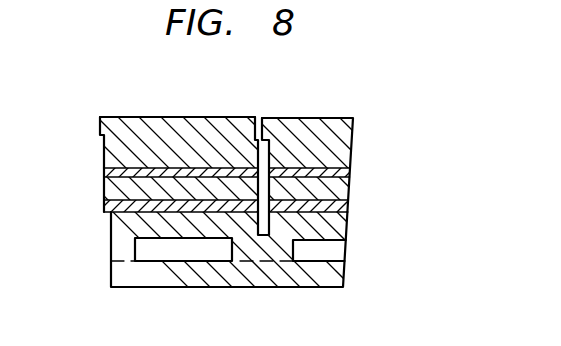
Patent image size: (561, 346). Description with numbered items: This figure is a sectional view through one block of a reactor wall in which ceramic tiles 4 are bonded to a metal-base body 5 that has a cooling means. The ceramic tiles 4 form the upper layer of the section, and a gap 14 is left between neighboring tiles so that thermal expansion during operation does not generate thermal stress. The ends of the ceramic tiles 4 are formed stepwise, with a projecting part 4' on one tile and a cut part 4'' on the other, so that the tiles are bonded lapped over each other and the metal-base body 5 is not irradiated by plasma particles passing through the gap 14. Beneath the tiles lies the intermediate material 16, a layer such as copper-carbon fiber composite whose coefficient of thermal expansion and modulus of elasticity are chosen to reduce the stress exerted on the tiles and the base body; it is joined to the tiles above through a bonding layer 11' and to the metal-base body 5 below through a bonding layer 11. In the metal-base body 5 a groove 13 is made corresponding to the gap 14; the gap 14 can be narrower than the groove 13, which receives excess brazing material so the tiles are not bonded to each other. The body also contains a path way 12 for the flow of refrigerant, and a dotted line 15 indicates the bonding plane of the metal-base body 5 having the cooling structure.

The ceramic tile 4 is at (306, 143).
The projecting part 4' is at (170, 142).
The cut part 4'' is at (177, 96).
The gap 14 is at (260, 117).
The bonding layer 11' is at (230, 190).
The intermediate material 16 is at (102, 192).
The bonding layer 11 is at (226, 203).
The metal-base body 5 is at (287, 284).
The groove 13 is at (265, 225).
The path way 12 is at (195, 252).
The dotted line 15 is at (111, 259).